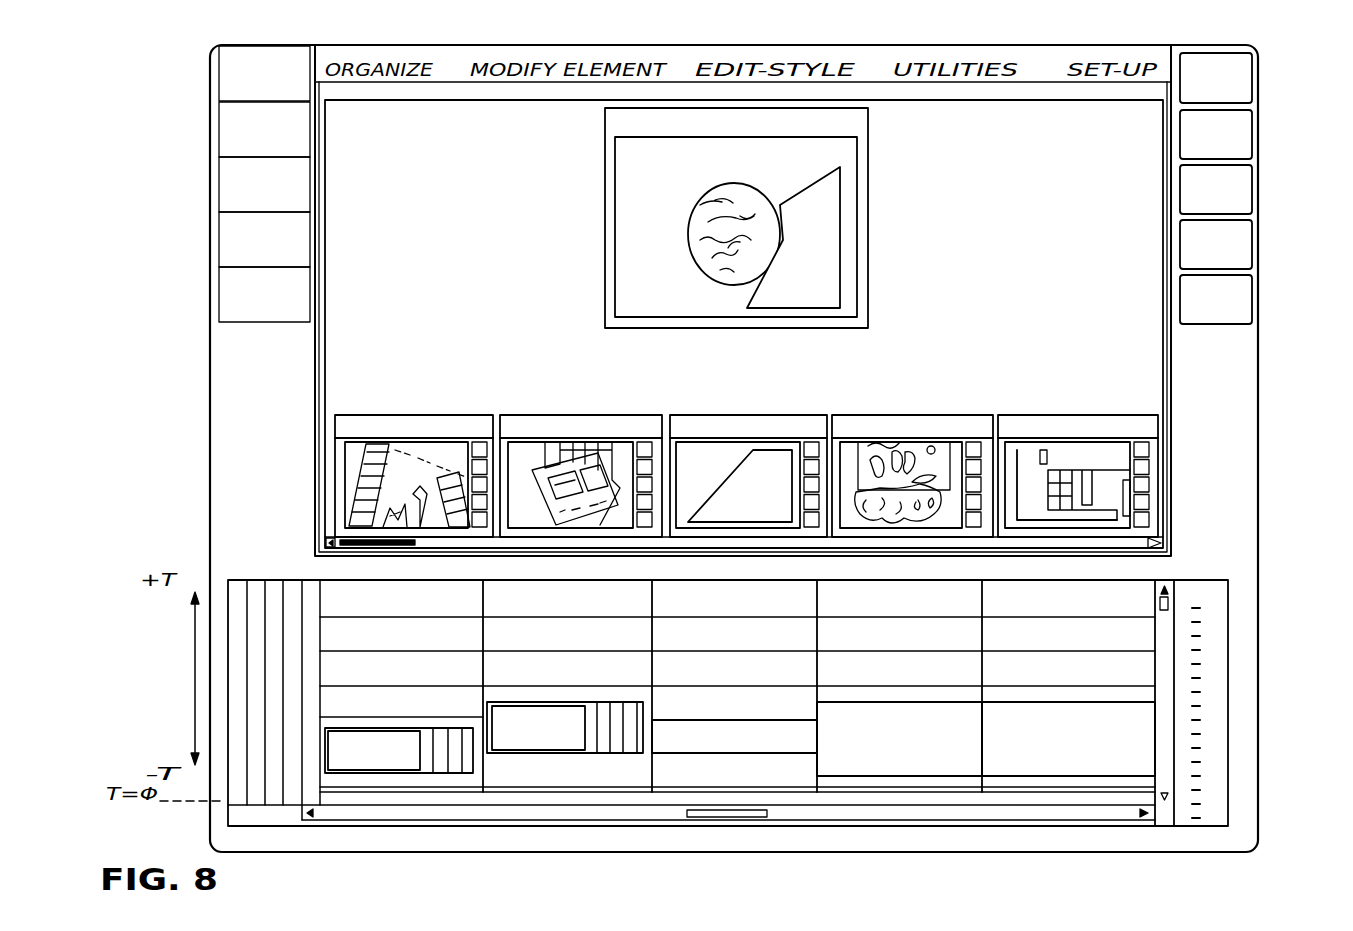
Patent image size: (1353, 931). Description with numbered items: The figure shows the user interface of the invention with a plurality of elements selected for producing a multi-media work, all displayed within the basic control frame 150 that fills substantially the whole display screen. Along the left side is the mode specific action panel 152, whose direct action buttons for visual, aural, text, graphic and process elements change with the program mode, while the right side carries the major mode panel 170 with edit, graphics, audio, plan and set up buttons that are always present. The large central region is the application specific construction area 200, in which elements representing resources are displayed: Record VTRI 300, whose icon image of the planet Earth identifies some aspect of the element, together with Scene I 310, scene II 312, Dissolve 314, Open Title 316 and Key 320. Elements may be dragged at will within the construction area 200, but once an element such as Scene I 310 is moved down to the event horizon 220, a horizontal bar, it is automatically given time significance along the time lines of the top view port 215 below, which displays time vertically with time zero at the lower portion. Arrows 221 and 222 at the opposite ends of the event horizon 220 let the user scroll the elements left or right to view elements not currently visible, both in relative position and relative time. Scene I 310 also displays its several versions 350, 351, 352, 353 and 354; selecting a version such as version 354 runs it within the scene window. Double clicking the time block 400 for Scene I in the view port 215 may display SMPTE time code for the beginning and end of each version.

The control frame 150 is at (1264, 493).
The mode specific action panel 152 is at (213, 47).
The major mode panel 170 is at (1262, 53).
The application specific construction area 200 is at (744, 324).
The top view port 215 is at (730, 468).
The event horizon 220 is at (730, 531).
The arrow 221 is at (1167, 541).
The arrow 222 is at (328, 539).
The Record VTR element 300 is at (858, 131).
The Scene I element 310 is at (495, 468).
The scene II element 312 is at (581, 476).
The Dissolve element 314 is at (748, 476).
The Open Title element 316 is at (912, 476).
The Key element 320 is at (1078, 476).
The icon frame indicator 350 is at (486, 450).
The version 351 is at (487, 467).
The version 352 is at (488, 484).
The version 353 is at (488, 502).
The version 354 is at (485, 518).
The time block 400 is at (428, 757).